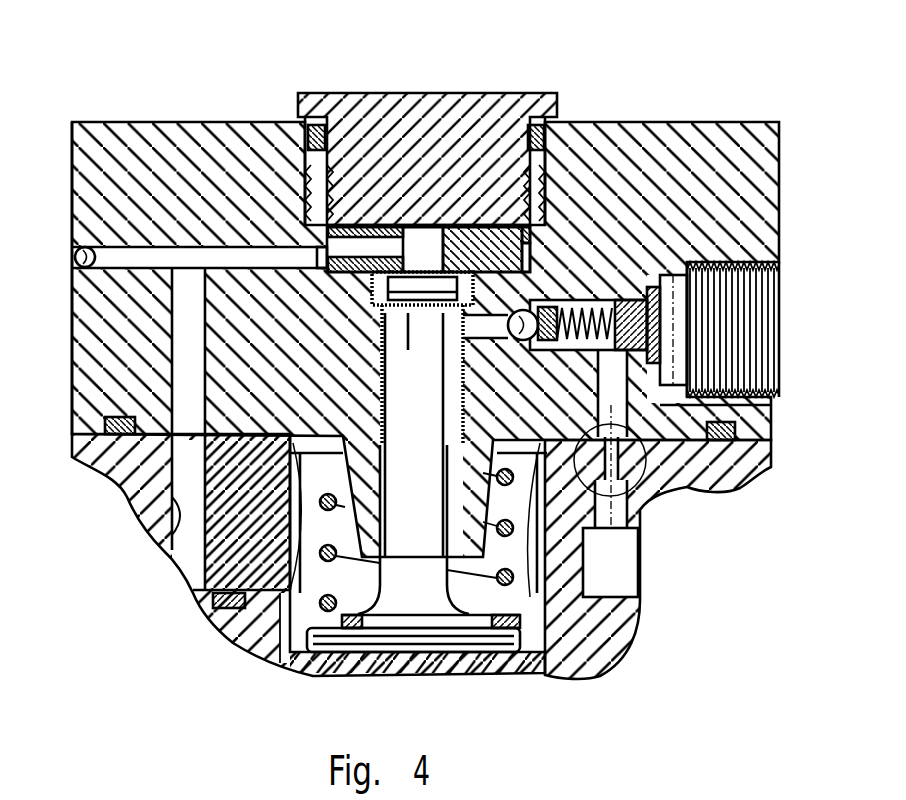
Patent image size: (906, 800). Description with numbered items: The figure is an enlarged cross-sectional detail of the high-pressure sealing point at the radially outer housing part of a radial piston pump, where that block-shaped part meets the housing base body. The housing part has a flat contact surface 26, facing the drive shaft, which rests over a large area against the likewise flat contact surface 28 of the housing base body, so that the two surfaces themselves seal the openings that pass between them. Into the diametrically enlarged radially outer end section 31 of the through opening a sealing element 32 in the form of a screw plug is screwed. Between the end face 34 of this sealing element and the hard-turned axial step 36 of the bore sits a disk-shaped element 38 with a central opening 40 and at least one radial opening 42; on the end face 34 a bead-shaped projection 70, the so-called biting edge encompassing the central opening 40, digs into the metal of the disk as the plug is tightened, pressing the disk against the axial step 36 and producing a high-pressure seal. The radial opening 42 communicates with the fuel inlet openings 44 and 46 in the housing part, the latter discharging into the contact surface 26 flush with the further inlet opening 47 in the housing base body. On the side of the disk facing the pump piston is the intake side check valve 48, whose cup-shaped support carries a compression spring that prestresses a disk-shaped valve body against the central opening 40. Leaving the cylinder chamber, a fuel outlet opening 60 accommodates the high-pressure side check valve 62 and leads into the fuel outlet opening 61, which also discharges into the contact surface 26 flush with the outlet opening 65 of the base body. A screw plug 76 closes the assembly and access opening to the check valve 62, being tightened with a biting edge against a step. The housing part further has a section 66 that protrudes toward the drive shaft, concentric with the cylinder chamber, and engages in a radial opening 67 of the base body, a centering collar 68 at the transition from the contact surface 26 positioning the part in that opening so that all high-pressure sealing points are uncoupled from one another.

The contact surface 26 is at (130, 492).
The contact surface 28 is at (148, 420).
The radially outer end section 31 is at (322, 155).
The sealing element 32 is at (422, 100).
The end face 34 is at (480, 228).
The axial step 36 is at (535, 262).
The disk-shaped element 38 is at (503, 228).
The central opening 40 is at (435, 228).
The radial opening 42 is at (350, 258).
The fuel inlet opening 44 is at (152, 245).
The fuel inlet opening 46 is at (182, 330).
The inlet opening 47 is at (178, 528).
The intake side check valve 48 is at (408, 315).
The fuel outlet opening 60 is at (586, 296).
The fuel outlet opening 61 is at (625, 405).
The high-pressure side check valve 62 is at (645, 285).
The outlet opening 65 is at (617, 505).
The section 66 is at (362, 560).
The radial opening 67 is at (537, 600).
The centering collar 68 is at (273, 590).
The bead-shaped projection 70 is at (373, 223).
The screw plug 76 is at (745, 343).